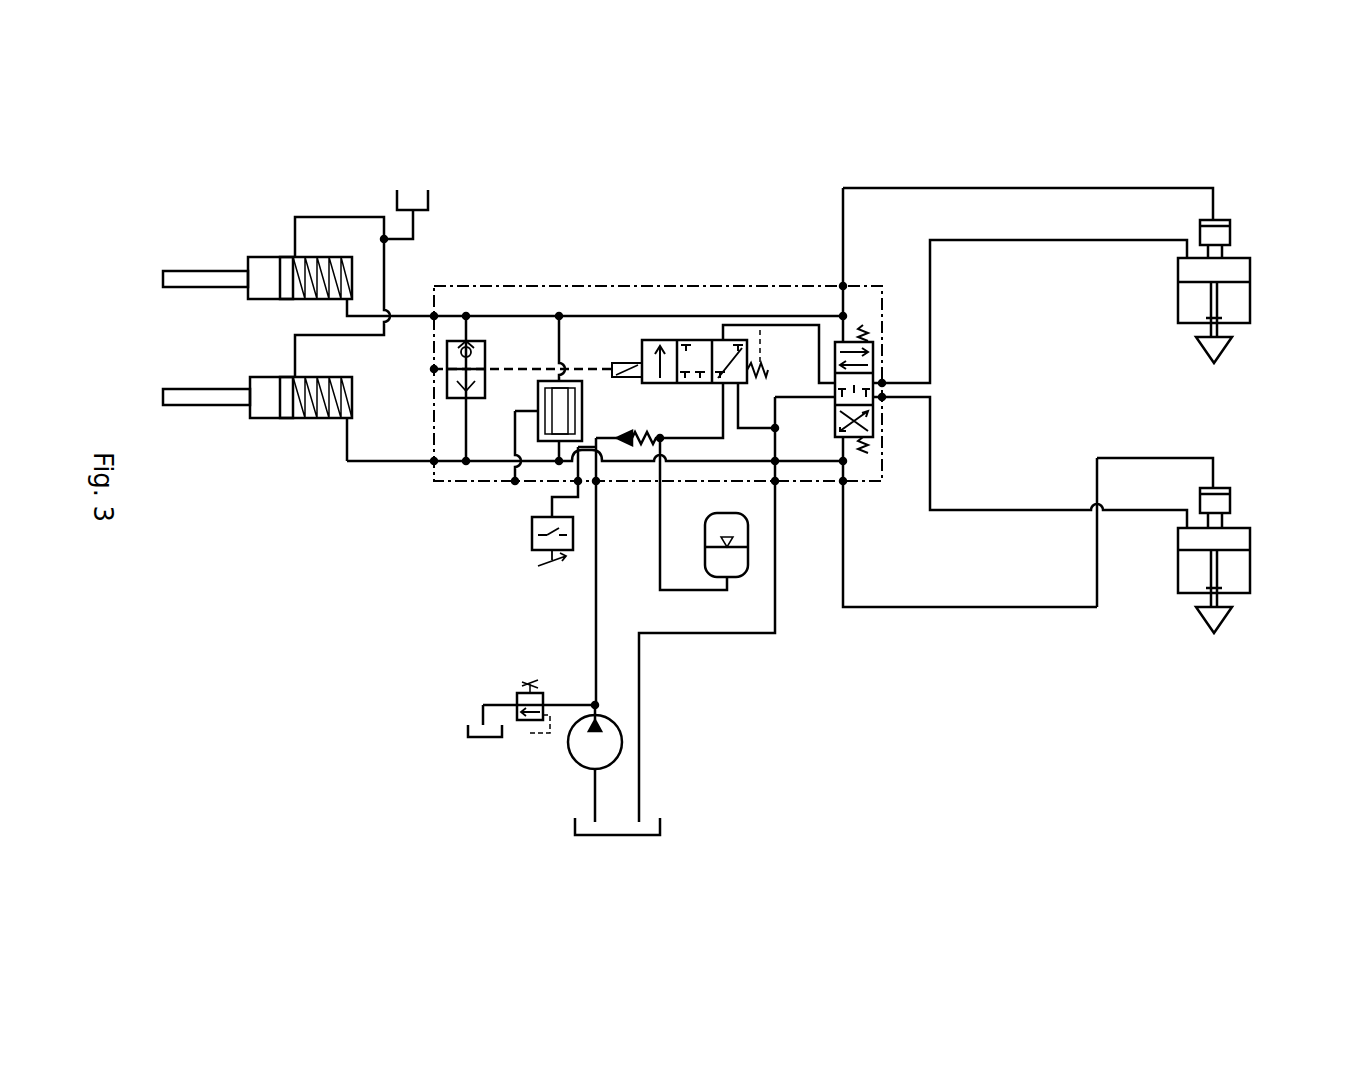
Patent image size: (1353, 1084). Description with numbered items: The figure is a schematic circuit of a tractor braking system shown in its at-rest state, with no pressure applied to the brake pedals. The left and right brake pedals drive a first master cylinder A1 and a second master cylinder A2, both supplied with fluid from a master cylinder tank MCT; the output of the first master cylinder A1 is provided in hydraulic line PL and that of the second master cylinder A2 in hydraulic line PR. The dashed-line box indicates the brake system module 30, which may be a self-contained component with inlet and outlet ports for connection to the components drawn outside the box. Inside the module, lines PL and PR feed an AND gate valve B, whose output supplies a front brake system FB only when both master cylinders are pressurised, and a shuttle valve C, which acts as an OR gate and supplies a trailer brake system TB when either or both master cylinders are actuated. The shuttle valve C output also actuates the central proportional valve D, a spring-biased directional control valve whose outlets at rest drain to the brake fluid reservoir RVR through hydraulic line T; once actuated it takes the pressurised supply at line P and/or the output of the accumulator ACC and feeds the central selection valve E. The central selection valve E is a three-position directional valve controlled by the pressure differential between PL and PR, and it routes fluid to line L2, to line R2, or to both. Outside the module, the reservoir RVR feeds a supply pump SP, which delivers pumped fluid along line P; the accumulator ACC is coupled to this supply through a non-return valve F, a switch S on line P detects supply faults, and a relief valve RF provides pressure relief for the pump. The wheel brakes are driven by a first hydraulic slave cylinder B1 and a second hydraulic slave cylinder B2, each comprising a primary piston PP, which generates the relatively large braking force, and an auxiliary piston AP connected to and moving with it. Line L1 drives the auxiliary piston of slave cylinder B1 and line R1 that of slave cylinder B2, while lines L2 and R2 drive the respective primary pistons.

The brake system module 30 is at (636, 285).
The first master cylinder A1 is at (276, 297).
The second master cylinder A2 is at (257, 402).
The master cylinder tank MCT is at (445, 211).
The hydraulic line PL is at (596, 302).
The trailer brake system TB is at (507, 370).
The hydraulic line PR is at (596, 452).
The shuttle valve C is at (476, 388).
The AND gate valve B is at (556, 388).
The front brake system FB is at (509, 463).
The non-return valve F is at (659, 414).
The central proportional valve D is at (723, 378).
The central selection valve E is at (843, 389).
The hydraulic line L1 is at (857, 265).
The hydraulic line L2 is at (1030, 313).
The hydraulic line R1 is at (968, 522).
The hydraulic line R2 is at (981, 461).
The hydraulic line T is at (720, 609).
The pumped brake fluid supply line P is at (607, 571).
The switch S is at (564, 506).
The brake fluid accumulator ACC is at (704, 514).
The auxiliary piston AP is at (1230, 233).
The first hydraulic slave cylinder B1 is at (1240, 310).
The second hydraulic slave cylinder B2 is at (1241, 580).
The primary piston PP is at (1178, 282).
The relief valve RF is at (533, 702).
The supply pump SP is at (576, 763).
The brake fluid reservoir RVR is at (647, 838).